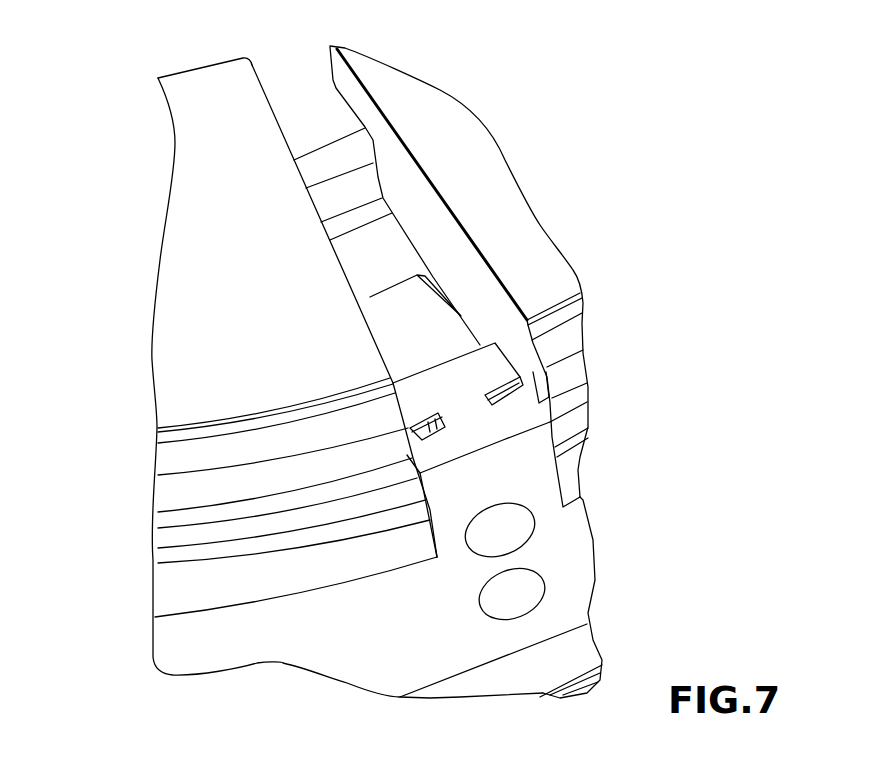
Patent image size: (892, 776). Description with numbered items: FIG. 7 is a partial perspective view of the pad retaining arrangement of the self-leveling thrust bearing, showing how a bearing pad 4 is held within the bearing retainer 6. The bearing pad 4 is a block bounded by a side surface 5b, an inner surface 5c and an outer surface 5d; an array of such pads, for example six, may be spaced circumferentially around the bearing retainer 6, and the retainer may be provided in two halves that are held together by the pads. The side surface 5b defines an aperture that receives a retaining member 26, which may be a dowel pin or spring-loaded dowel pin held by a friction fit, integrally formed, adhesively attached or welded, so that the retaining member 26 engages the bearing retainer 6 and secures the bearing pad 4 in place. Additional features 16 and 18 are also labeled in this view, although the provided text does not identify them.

The bearing pad 4 is at (315, 353).
The side surface 5b is at (265, 87).
The inner surface 5c is at (200, 66).
The outer surface 5d is at (170, 440).
The bearing retainer 6 is at (563, 557).
The connecting plate 16 is at (527, 477).
The lower band 18 is at (168, 585).
The retaining member 26 is at (490, 401).